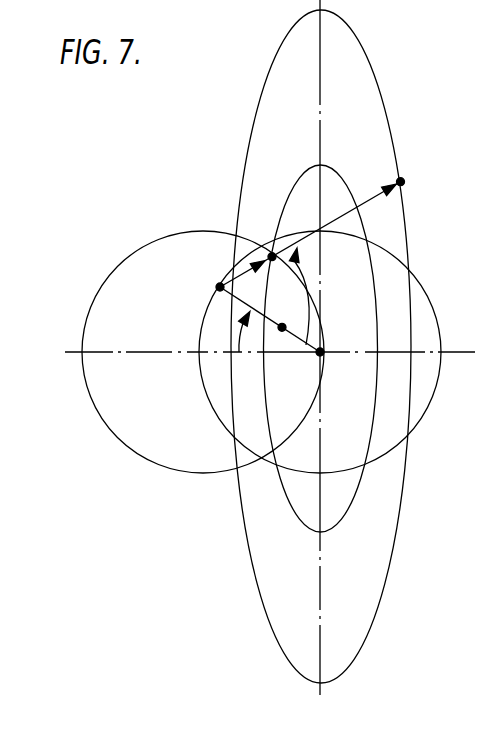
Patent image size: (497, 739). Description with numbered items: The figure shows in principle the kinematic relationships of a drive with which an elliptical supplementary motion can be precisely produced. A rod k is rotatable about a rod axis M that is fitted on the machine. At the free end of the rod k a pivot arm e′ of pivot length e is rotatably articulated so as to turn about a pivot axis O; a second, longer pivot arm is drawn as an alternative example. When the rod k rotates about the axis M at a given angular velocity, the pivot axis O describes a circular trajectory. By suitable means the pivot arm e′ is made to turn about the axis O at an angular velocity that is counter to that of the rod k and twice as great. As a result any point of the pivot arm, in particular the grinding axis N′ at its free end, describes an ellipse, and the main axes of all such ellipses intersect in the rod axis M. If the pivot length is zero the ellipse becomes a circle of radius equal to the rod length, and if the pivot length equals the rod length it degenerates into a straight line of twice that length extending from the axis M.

The pivot axis O is at (219, 288).
The rod axis M is at (322, 354).
The rod k is at (282, 331).
The grinding axis N′ is at (272, 253).
The pivot arm e′ is at (243, 273).